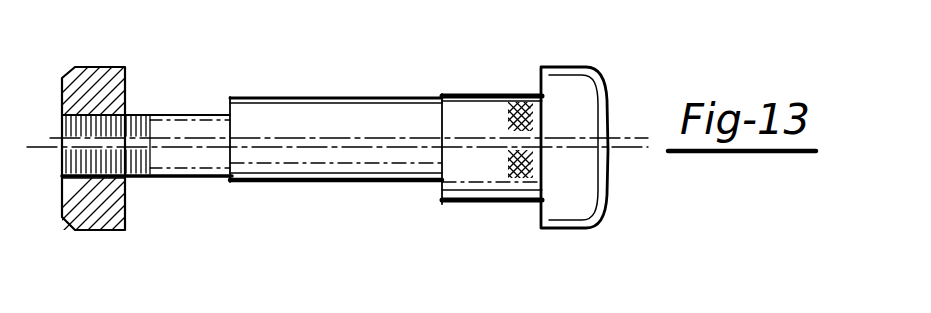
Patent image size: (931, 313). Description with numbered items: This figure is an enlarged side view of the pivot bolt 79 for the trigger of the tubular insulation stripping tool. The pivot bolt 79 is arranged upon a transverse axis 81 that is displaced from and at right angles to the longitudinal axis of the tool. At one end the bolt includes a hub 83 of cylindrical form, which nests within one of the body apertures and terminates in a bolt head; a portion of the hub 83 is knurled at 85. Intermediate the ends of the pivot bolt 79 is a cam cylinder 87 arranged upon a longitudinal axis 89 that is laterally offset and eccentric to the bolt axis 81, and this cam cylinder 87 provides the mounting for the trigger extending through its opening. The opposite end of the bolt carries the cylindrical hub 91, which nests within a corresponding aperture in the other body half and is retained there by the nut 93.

The pivot bolt 79 is at (410, 60).
The transverse axis 81 is at (249, 183).
The hub 83 is at (478, 100).
The knurled portion 85 is at (527, 100).
The cam cylinder 87 is at (338, 170).
The longitudinal axis 89 is at (257, 181).
The cylindrical hub 91 is at (187, 115).
The nut 93 is at (97, 67).